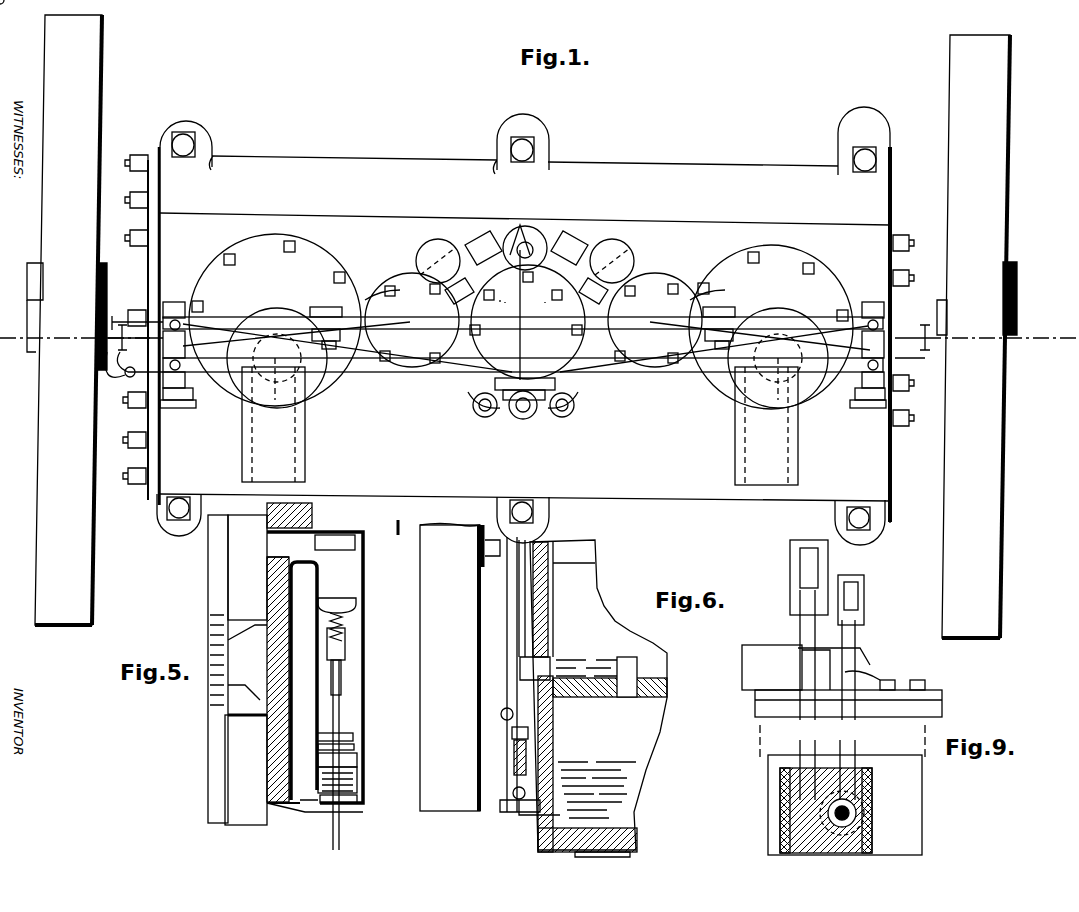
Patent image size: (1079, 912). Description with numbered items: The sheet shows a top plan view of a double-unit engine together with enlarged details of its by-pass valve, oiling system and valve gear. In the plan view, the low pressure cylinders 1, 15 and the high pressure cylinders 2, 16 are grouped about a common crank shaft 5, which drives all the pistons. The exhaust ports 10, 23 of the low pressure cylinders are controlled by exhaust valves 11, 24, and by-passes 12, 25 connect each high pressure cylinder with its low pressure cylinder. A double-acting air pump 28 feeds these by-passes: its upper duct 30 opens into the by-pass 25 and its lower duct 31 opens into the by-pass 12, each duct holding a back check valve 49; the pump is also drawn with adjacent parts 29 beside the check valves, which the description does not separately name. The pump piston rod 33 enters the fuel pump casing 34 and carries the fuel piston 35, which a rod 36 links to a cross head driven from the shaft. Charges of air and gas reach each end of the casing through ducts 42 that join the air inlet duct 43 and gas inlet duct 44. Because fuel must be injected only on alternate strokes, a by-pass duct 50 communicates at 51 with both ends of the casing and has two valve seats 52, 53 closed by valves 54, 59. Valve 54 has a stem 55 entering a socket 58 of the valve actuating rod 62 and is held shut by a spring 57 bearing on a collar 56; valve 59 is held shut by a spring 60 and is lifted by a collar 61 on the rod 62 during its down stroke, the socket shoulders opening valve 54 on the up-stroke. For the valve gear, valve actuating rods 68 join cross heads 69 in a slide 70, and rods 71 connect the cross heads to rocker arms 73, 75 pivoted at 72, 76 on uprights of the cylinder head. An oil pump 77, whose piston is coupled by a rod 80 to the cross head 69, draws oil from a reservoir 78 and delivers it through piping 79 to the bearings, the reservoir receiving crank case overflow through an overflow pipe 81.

In FIG. 1, the low pressure cylinder 1 is at (275, 320).
In FIG. 1, the high pressure cylinder 2 is at (395, 285).
In FIG. 1, the crank shaft 5 is at (40, 268).
In FIG. 5, the crank shaft 5 is at (398, 515).
In FIG. 1, the exhaust port 10 is at (322, 395).
In FIG. 1, the exhaust valve 11 is at (273, 420).
In FIG. 1, the by-pass 12 is at (368, 288).
In FIG. 1, the low pressure cylinder 15 is at (771, 327).
In FIG. 9, the low pressure cylinder 15 is at (768, 718).
In FIG. 1, the high pressure cylinder 16 is at (680, 292).
In FIG. 1, the exhaust port 23 is at (740, 385).
In FIG. 9, the exhaust port 23 is at (770, 640).
In FIG. 1, the exhaust valve 24 is at (766, 421).
In FIG. 1, the by-pass 25 is at (712, 292).
In FIG. 9, the by-pass 25 is at (870, 680).
In FIG. 1, the pump 28 is at (527, 322).
In FIG. 1, the bolt block 29 is at (478, 238).
In FIG. 1, the duct 30 is at (544, 303).
In FIG. 1, the duct 31 is at (509, 303).
In FIG. 5, the rod 33 is at (218, 548).
In FIG. 5, the fuel pump casing 34 is at (246, 672).
In FIG. 5, the fuel piston 35 is at (258, 715).
In FIG. 5, the rod 36 is at (212, 735).
In FIG. 1, the ducts 42 is at (545, 240).
In FIG. 1, the air inlet duct 43 is at (500, 220).
In FIG. 1, the gas inlet duct 44 is at (555, 235).
In FIG. 1, the back check valve 49 is at (430, 250).
In FIG. 1, the by-pass duct 50 is at (529, 318).
In FIG. 5, the by-pass duct 50 is at (364, 540).
In FIG. 5, the communication point 51 is at (300, 540).
In FIG. 5, the valve seat 52 is at (356, 606).
In FIG. 5, the valve seat 53 is at (353, 735).
In FIG. 5, the valve 54 is at (322, 600).
In FIG. 5, the stem 55 is at (342, 690).
In FIG. 5, the collar 56 is at (346, 655).
In FIG. 5, the spring 57 is at (345, 620).
In FIG. 5, the socket 58 is at (342, 672).
In FIG. 5, the valve 59 is at (357, 760).
In FIG. 5, the spring 60 is at (357, 783).
In FIG. 5, the collar 61 is at (355, 747).
In FIG. 5, the valve actuating rod 62 is at (333, 830).
In FIG. 9, the valve actuating rod 68 is at (858, 830).
In FIG. 1, the cross head 69 is at (195, 405).
In FIG. 9, the cross head 69 is at (782, 832).
In FIG. 1, the slide 70 is at (170, 400).
In FIG. 9, the slide 70 is at (780, 790).
In FIG. 1, the rod 71 is at (175, 302).
In FIG. 9, the rod 71 is at (850, 640).
In FIG. 1, the pivot 72 is at (325, 308).
In FIG. 1, the rocker arm 73 is at (250, 322).
In FIG. 9, the rocker arm 73 is at (850, 588).
In FIG. 1, the rocker arm 75 is at (385, 372).
In FIG. 9, the rocker arm 75 is at (808, 548).
In FIG. 1, the pivot 76 is at (468, 392).
In FIG. 1, the oil pump 77 is at (110, 372).
In FIG. 6, the oil pump 77 is at (512, 760).
In FIG. 6, the reservoir 78 is at (593, 698).
In FIG. 1, the piping 79 is at (300, 325).
In FIG. 6, the piping 79 is at (507, 660).
In FIG. 1, the rod 80 is at (125, 378).
In FIG. 6, the rod 80 is at (524, 615).
In FIG. 6, the overflow pipe 81 is at (628, 660).